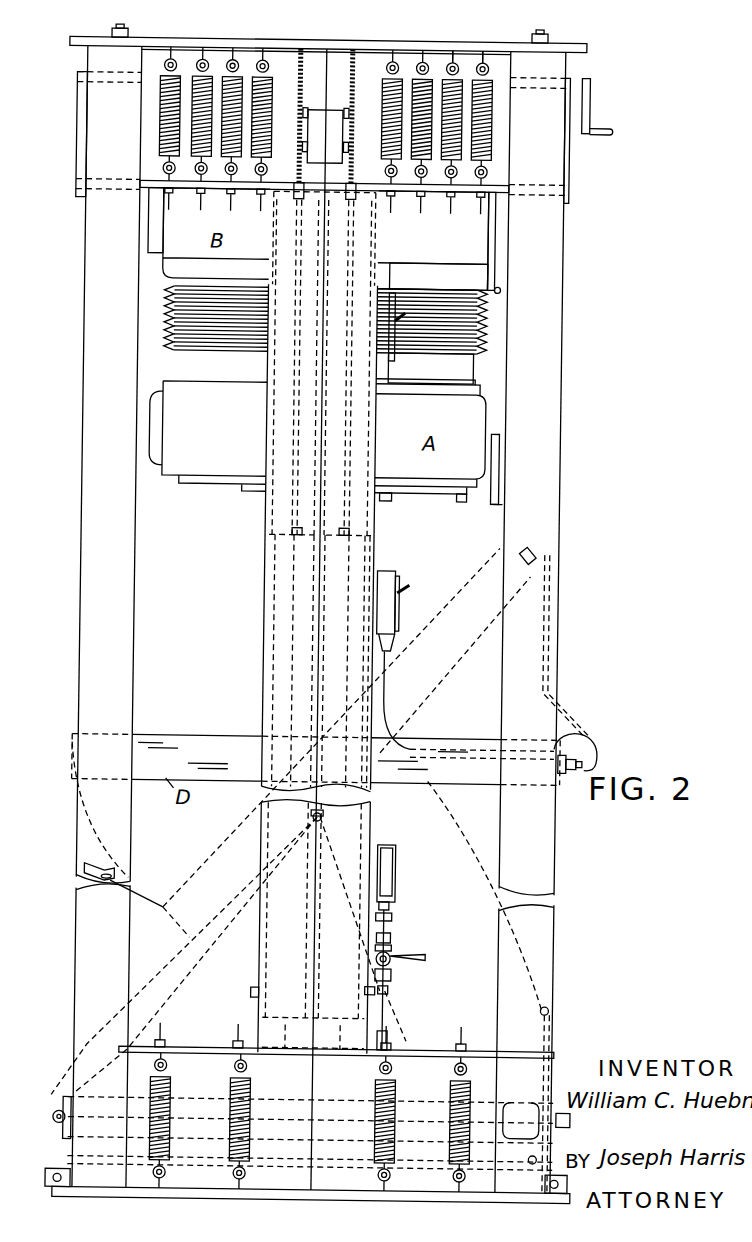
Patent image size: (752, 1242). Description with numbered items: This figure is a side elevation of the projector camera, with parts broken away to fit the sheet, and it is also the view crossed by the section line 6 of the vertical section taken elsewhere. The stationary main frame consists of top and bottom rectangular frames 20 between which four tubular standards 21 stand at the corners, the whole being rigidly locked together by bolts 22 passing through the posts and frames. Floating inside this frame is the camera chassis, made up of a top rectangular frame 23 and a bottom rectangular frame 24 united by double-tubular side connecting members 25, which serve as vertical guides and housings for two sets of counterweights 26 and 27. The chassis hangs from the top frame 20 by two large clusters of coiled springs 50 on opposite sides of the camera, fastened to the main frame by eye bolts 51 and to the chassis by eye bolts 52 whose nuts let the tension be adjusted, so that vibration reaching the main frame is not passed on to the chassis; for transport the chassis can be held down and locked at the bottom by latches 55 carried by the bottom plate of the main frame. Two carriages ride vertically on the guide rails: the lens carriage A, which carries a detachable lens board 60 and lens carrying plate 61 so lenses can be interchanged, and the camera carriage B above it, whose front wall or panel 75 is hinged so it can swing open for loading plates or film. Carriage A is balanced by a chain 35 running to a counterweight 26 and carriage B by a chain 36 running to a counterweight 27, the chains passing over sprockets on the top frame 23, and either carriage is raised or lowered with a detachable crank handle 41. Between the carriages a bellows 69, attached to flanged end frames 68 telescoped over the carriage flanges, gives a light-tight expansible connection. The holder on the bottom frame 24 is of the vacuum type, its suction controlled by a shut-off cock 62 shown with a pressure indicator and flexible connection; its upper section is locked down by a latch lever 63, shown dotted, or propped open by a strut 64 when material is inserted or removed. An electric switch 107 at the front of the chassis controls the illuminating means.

The section line 6— 6 is at (318, 608).
The top and bottom rectangular frames 20 is at (580, 46).
The tubular standards 21 is at (90, 237).
The bolts 22 is at (122, 33).
The top rectangular frame of the chassis 23 is at (603, 107).
The bottom rectangular frame of the chassis 24 is at (308, 1160).
The side connecting members 25 is at (264, 528).
The counterweights 26 is at (268, 538).
The counterweights 27 is at (370, 538).
The chain 35 is at (292, 181).
The chain 36 is at (348, 181).
The operating crank handle 41 is at (498, 475).
The coiled springs 50 is at (486, 138).
The eye bolts 51 is at (474, 58).
The eye bolts 52 is at (445, 212).
The latches 55 is at (55, 1178).
The lens board 60 is at (458, 500).
The lens carrying plate 61 is at (386, 501).
The shut-off cock 62 is at (400, 955).
The latch lever 63 is at (556, 1013).
The strut 64 is at (412, 1027).
The flanged end frames 68 is at (438, 323).
The bellows 69 is at (484, 340).
The front wall or panel 75 is at (492, 262).
The electric switch 107 is at (398, 578).